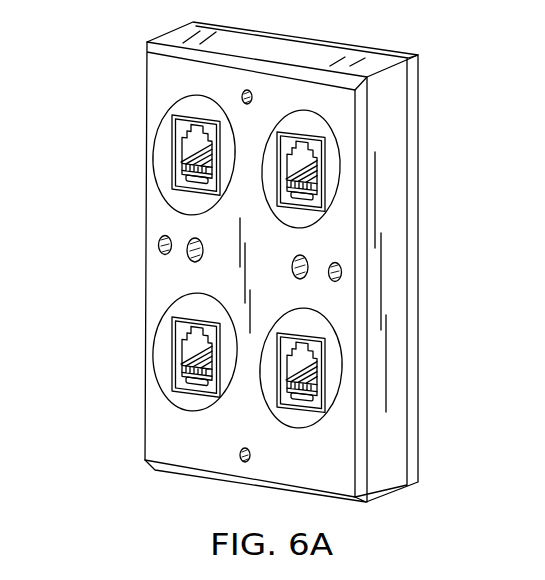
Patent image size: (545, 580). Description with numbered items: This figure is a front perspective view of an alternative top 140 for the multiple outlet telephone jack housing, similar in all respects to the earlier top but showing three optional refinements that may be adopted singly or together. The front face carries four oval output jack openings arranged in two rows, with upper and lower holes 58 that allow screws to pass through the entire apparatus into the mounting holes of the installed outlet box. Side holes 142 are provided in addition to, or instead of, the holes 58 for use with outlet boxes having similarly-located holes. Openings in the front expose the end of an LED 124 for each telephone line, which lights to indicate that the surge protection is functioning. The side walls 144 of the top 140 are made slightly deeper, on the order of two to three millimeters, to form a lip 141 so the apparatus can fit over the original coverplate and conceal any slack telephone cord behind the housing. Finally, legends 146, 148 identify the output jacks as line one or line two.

The top 140 is at (310, 52).
The lip 141 is at (419, 292).
The side holes 142 is at (160, 241).
The LED 124 is at (292, 271).
The side walls 144 is at (388, 207).
The legend 146 is at (166, 78).
The legend 148 is at (166, 428).
The holes 58 is at (244, 463).